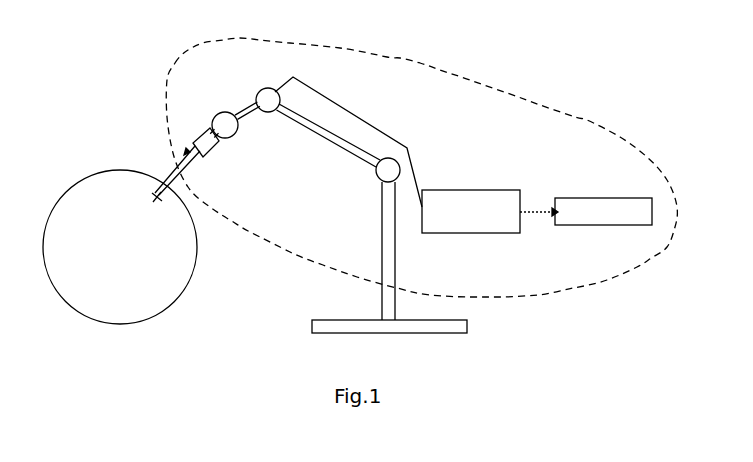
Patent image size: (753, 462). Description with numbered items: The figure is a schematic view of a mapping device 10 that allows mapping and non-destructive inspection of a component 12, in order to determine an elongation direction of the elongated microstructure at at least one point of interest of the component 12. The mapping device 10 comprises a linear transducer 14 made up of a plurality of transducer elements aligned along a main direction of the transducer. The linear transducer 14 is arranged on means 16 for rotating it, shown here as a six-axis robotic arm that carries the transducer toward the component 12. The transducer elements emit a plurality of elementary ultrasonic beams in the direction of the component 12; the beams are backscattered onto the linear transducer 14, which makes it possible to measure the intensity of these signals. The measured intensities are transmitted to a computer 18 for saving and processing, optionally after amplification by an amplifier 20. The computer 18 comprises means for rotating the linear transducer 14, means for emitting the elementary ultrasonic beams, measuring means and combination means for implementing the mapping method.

The mapping device 10 is at (400, 58).
The component 12 is at (178, 300).
The linear transducer 14 is at (206, 131).
The means for rotating the linear transducer 16 is at (327, 143).
The computer 18 is at (622, 198).
The amplifier 20 is at (457, 190).